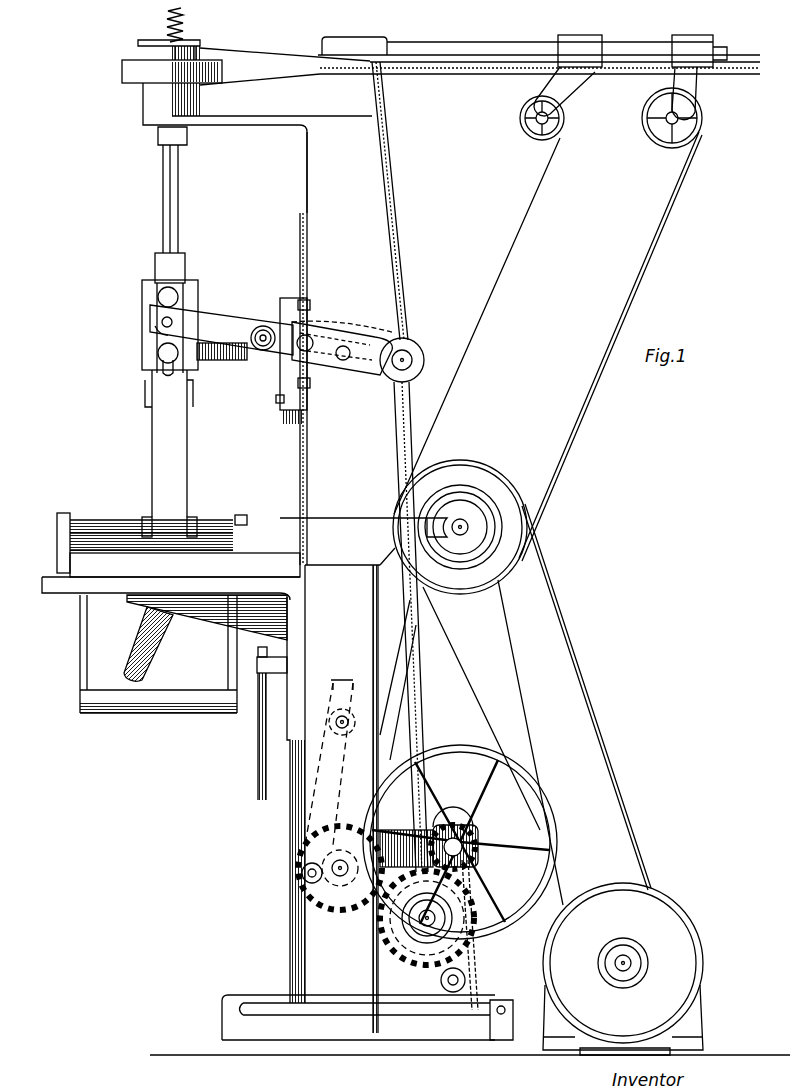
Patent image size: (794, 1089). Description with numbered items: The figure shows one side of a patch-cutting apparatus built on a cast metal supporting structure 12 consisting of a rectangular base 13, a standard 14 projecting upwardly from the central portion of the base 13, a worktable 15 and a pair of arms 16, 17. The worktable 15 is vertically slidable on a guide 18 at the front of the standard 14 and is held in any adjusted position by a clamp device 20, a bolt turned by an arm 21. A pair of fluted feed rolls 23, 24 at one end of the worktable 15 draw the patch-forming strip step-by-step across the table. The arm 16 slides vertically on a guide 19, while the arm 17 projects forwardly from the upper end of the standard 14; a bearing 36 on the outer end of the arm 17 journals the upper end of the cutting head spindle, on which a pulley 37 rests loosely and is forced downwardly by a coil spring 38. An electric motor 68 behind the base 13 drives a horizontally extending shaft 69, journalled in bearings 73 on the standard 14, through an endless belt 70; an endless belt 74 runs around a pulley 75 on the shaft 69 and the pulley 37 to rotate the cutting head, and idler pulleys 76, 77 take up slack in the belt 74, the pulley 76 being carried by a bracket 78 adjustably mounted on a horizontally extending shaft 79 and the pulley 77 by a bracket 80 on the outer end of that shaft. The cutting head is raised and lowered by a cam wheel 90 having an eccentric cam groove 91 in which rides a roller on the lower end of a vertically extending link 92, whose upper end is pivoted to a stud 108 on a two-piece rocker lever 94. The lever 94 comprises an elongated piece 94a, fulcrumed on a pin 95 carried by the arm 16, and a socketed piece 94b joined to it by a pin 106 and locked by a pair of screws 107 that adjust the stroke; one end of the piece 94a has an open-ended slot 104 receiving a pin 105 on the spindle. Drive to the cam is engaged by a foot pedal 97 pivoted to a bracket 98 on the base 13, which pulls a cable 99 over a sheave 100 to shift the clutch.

The supporting structure 12 is at (386, 185).
The base 13 is at (325, 1050).
The standard 14 is at (421, 775).
The worktable 15 is at (115, 599).
The arm 16 is at (227, 358).
The arm 17 is at (248, 116).
The guide 18 is at (300, 932).
The guide 19 is at (300, 460).
The clamp device 20 is at (256, 665).
The arm 21 is at (258, 752).
The feed roll 23 is at (100, 521).
The feed roll 24 is at (68, 560).
The bearing 36 is at (148, 108).
The pulley 37 is at (205, 44).
The coil spring 38 is at (186, 26).
The electric motor 68 is at (666, 918).
The shaft 69 is at (470, 527).
The endless belt 70 is at (557, 600).
The bearings 73 is at (472, 545).
The endless belt 74 is at (563, 440).
The pulley 75 is at (506, 497).
The idler pulley 76 is at (535, 138).
The idler pulley 77 is at (702, 140).
The bracket 78 is at (588, 42).
The shaft 79 is at (495, 48).
The bracket 80 is at (716, 39).
The cam wheel 90 is at (405, 966).
The cam groove 91 is at (479, 937).
The link 92 is at (405, 477).
The rocker lever 94 is at (364, 331).
The elongated lever piece 94a is at (235, 316).
The socketed lever piece 94b is at (342, 366).
The fulcrum pin 95 is at (260, 352).
The foot pedal 97 is at (420, 1013).
The bracket 98 is at (499, 1032).
The cable 99 is at (466, 984).
The sheave 100 is at (479, 960).
The slot 104 is at (155, 330).
The pin 105 is at (161, 322).
The pin 106 is at (396, 333).
The screws 107 is at (311, 308).
The stud 108 is at (418, 356).